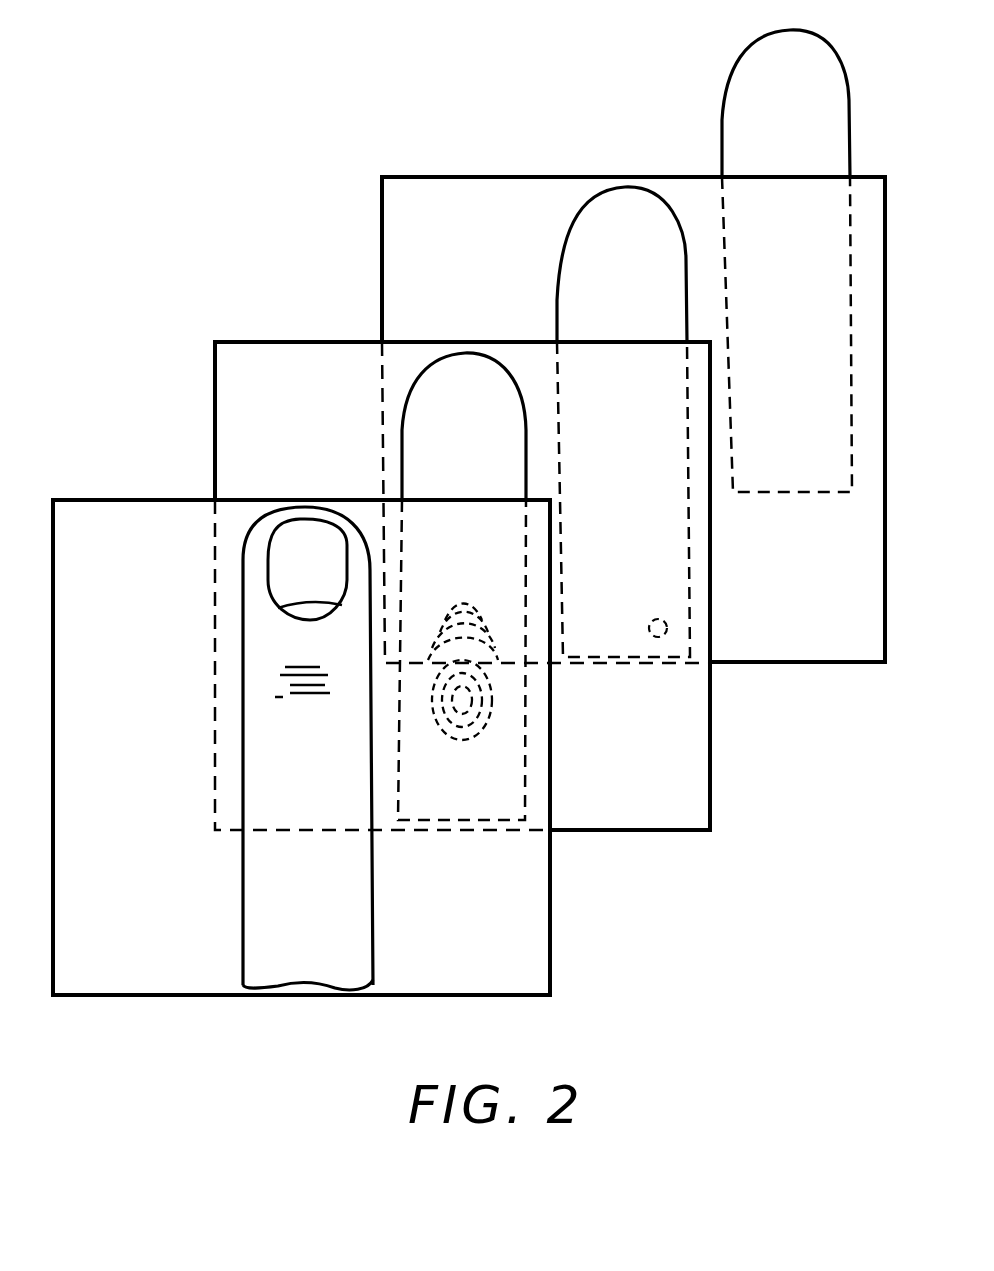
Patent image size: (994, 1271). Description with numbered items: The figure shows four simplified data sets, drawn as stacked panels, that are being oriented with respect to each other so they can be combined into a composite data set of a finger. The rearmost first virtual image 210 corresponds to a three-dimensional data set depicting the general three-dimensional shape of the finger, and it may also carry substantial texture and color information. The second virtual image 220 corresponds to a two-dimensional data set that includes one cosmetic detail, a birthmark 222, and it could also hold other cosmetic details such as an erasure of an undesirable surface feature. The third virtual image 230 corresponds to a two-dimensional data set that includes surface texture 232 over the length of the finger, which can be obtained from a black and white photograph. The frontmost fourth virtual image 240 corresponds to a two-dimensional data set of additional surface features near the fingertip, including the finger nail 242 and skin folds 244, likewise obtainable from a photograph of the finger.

The first virtual image 210 is at (730, 128).
The second virtual image 220 is at (606, 198).
The birthmark 222 is at (660, 652).
The third virtual image 230 is at (412, 402).
The surface texture 232 is at (503, 709).
The fourth virtual image 240 is at (243, 615).
The finger nail 242 is at (268, 560).
The skin folds 244 is at (287, 670).